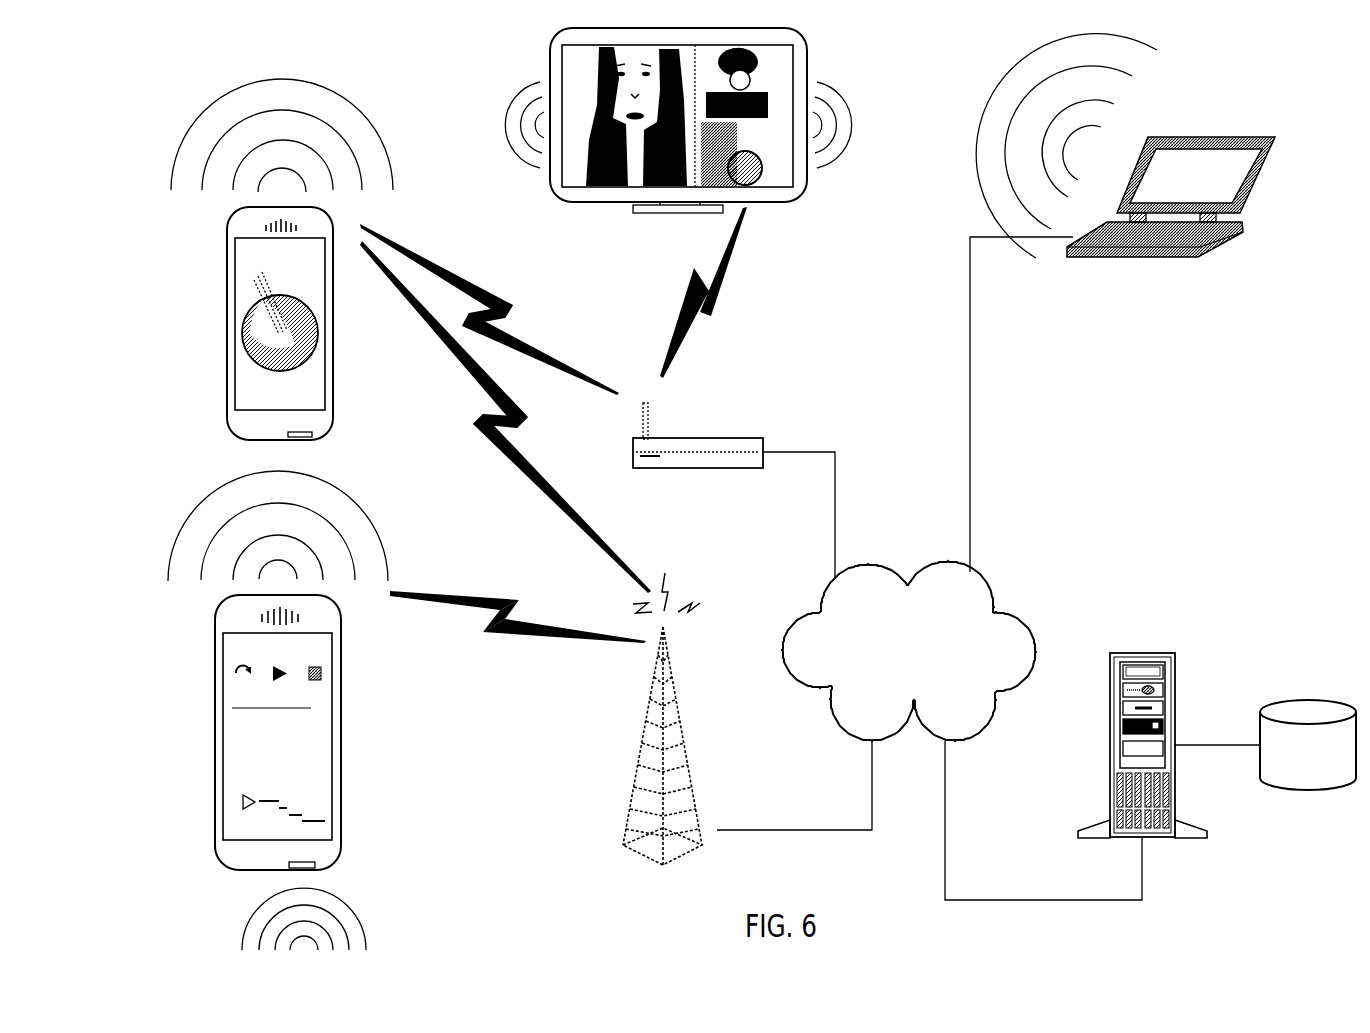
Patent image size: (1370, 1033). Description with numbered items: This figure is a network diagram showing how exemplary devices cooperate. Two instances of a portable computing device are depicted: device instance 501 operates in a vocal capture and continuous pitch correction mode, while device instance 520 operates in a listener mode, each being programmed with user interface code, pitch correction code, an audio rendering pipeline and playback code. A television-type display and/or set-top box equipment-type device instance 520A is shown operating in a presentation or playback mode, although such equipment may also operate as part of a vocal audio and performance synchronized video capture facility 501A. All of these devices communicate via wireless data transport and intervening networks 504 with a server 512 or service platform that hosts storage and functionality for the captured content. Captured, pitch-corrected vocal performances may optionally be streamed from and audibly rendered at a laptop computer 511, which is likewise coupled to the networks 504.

The portable computing device instance 520 is at (228, 354).
The portable computing device instance 501 is at (334, 781).
The vocal audio and performance synchronized video capture facility 501A is at (729, 135).
The television-type display and/or set-top box equipment-type device instance 520A is at (787, 190).
The networks 504 is at (993, 667).
The laptop computer 511 is at (1112, 258).
The server 512 is at (1172, 725).